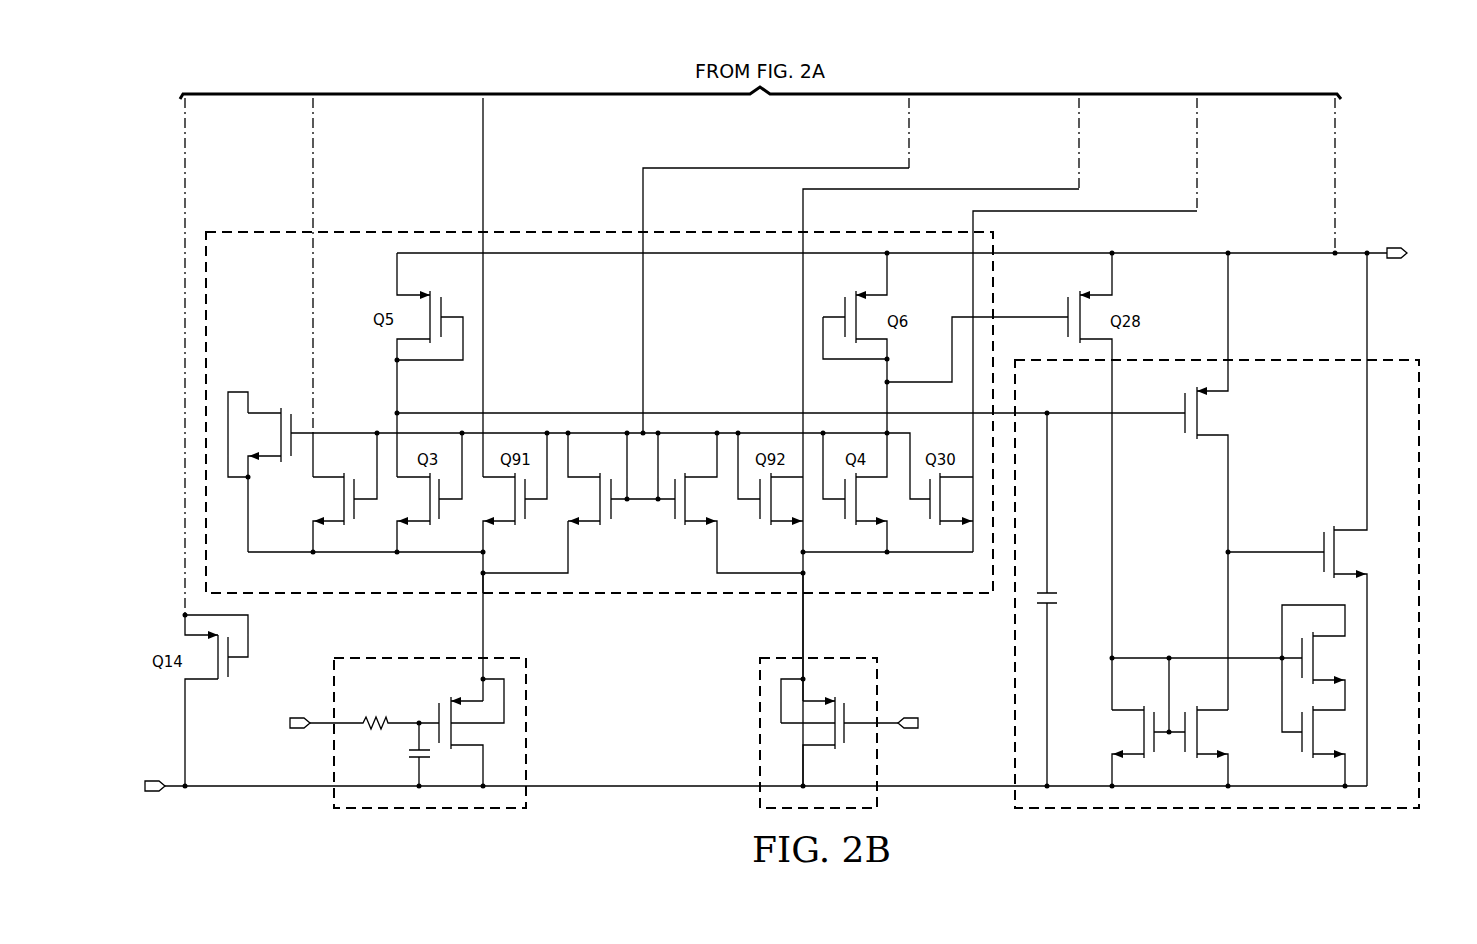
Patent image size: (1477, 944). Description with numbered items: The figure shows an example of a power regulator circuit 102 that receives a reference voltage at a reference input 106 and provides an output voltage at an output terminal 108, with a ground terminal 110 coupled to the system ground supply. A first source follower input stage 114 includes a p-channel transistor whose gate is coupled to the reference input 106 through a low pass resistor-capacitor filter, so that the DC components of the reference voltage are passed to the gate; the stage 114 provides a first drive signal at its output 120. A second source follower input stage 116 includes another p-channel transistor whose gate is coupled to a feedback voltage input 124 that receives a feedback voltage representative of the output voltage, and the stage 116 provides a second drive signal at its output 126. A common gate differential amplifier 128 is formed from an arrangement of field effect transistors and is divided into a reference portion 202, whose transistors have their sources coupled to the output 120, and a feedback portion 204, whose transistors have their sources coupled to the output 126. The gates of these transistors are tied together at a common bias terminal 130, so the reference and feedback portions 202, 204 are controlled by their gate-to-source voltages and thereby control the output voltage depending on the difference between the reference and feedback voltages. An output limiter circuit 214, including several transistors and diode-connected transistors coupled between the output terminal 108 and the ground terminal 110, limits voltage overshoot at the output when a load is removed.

The regulator circuit 102 is at (1396, 140).
The reference input 106 is at (297, 716).
The output terminal 108 is at (1392, 247).
The ground terminal 110 is at (160, 795).
The first source follower input stage 114 is at (390, 813).
The second source follower input stage 116 is at (753, 747).
The first output 120 is at (478, 657).
The feedback voltage input 124 is at (912, 716).
The output 126 is at (807, 657).
The common gate differential amplifier 128 is at (537, 229).
The common bias terminal 130 is at (642, 392).
The reference portion 202 is at (550, 616).
The feedback portion 204 is at (735, 616).
The output limiter circuit 214 is at (1312, 812).